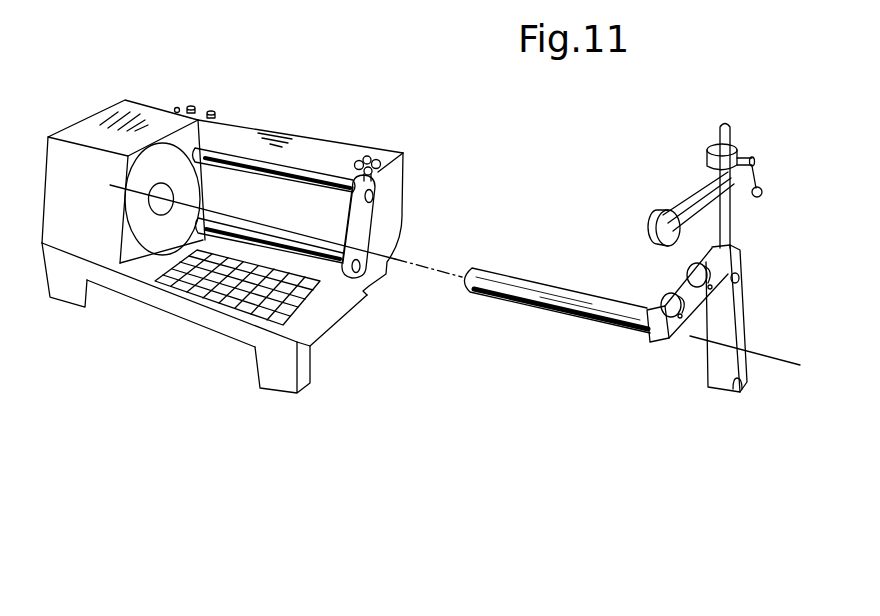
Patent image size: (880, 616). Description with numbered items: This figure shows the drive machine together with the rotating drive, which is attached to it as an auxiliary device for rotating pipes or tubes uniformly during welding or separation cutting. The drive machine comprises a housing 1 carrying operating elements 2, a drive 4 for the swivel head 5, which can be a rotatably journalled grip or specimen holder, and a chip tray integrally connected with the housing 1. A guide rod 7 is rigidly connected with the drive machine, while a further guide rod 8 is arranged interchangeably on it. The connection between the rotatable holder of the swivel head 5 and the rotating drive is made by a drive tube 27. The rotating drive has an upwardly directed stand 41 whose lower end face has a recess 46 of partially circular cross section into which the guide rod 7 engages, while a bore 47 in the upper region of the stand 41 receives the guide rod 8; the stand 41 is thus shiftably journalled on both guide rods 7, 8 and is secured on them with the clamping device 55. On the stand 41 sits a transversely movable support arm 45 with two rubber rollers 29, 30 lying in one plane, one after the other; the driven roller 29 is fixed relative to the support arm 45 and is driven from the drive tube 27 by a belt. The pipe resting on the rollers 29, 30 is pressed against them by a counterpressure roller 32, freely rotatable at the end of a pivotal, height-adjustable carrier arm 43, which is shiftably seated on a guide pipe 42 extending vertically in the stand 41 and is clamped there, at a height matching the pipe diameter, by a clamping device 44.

The housing 1 is at (247, 127).
The operating elements 2 is at (206, 108).
The drive 4 is at (111, 108).
The swivel head 5 is at (141, 246).
The guide rod 7 is at (240, 238).
The further guide rod 8 is at (280, 170).
The drive tube 27 is at (532, 303).
The roller 29 is at (655, 291).
The roller 30 is at (686, 267).
The counterpressure roller 32 is at (656, 212).
The stand 41 is at (737, 335).
The guide pipe 42 is at (728, 231).
The carrier arm 43 is at (693, 184).
The clamping device 44 is at (749, 162).
The support arm 45 is at (655, 322).
The recess 46 is at (737, 390).
The bore 47 is at (740, 275).
The clamping device 55 is at (380, 160).